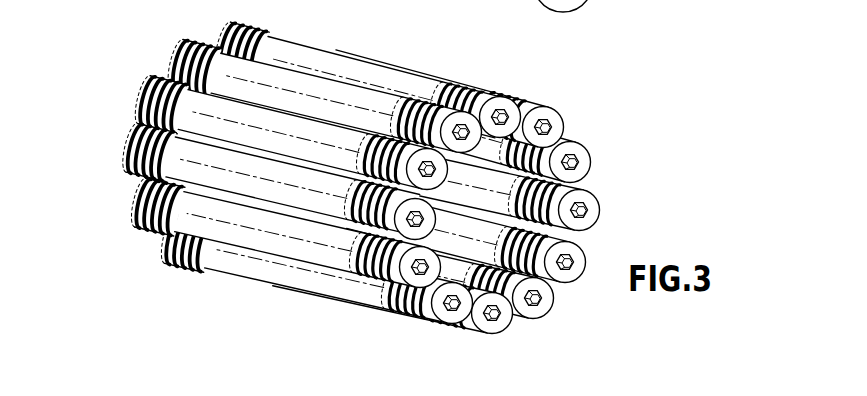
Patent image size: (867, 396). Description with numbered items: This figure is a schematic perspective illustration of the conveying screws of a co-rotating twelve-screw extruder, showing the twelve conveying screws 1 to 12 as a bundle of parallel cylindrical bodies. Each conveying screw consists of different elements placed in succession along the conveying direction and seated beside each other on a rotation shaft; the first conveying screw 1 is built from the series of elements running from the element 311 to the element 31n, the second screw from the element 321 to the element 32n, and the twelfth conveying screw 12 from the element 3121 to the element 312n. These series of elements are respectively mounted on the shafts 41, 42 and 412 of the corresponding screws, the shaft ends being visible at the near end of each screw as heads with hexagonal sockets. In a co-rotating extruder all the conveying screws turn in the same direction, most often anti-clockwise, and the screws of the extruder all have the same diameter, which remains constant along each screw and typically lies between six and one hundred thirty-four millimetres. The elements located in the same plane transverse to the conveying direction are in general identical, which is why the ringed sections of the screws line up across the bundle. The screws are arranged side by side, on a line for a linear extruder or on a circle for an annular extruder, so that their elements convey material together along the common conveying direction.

The conveying screw 1 is at (151, 61).
The conveying screw 12 is at (119, 146).
The element 31n is at (160, 98).
The element 32n is at (187, 40).
The element 311 is at (349, 161).
The element 312n is at (128, 154).
The element 321 is at (420, 103).
The element 3121 is at (362, 218).
The shaft 41 is at (434, 173).
The shaft 42 is at (466, 140).
The shaft 412 is at (420, 222).